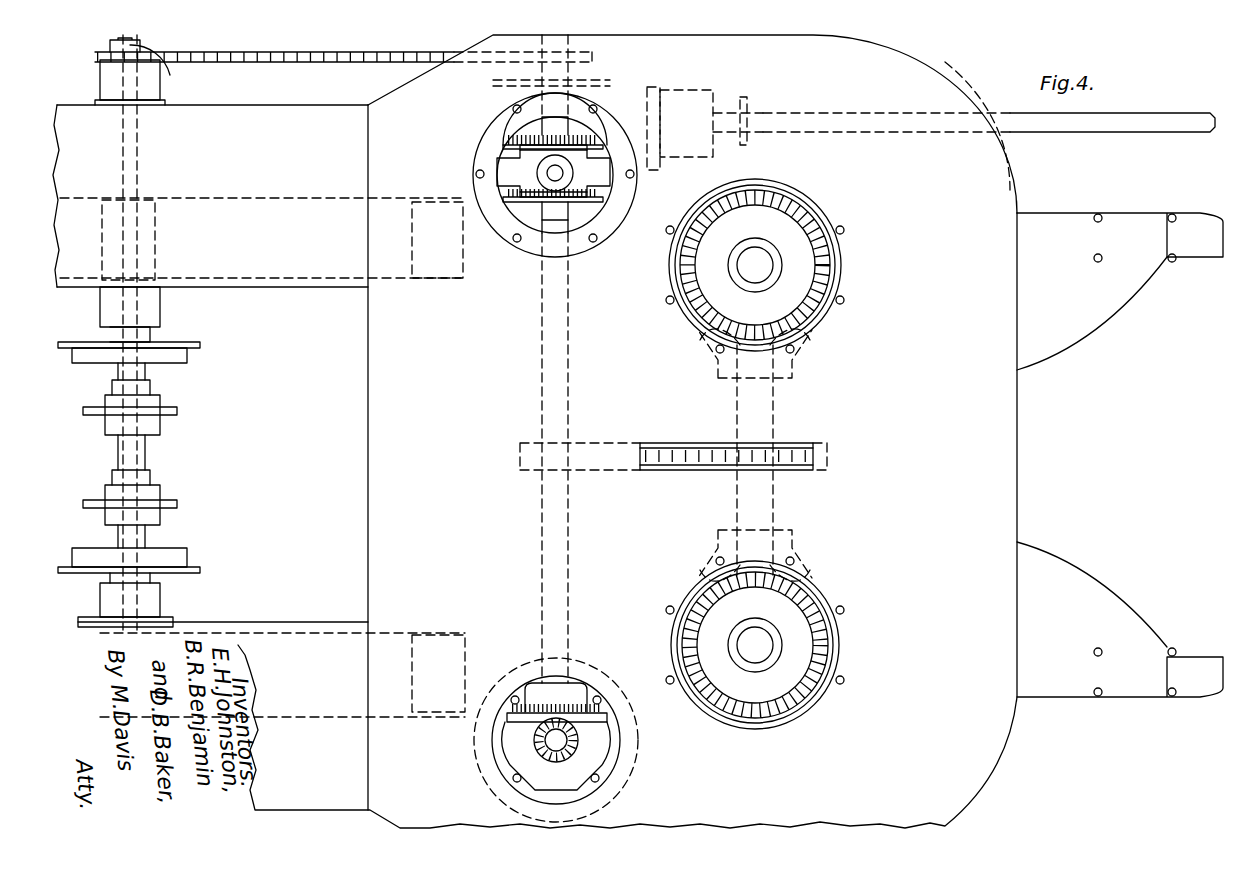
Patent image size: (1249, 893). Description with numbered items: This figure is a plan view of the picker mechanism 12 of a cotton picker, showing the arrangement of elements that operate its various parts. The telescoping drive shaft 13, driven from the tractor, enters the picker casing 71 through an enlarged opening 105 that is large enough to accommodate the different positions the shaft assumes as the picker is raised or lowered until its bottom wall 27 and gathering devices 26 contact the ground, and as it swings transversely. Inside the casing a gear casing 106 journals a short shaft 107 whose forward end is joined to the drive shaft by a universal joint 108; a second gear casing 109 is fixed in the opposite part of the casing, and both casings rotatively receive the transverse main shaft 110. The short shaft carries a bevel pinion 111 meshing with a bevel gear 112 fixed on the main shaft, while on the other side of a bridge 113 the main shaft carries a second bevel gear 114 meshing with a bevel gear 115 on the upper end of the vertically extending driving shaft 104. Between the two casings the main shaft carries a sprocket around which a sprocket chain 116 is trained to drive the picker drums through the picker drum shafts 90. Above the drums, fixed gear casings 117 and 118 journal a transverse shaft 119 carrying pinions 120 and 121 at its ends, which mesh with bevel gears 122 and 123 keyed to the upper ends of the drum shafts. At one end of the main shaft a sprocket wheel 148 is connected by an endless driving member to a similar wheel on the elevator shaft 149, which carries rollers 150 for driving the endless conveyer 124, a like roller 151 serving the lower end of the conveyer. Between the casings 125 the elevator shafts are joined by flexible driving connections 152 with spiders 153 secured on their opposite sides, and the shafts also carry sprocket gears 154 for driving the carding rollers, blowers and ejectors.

The picker mechanism 12 is at (1017, 458).
The telescoping drive shaft 13 is at (1086, 126).
The gathering devices 26 is at (1205, 255).
The bottom wall 27 is at (1085, 355).
The picker casing 71 is at (942, 78).
The picker drum shafts 90 is at (770, 267).
The vertically extending driving shaft 104 is at (535, 197).
The enlarged opening 105 is at (975, 112).
The gear casing 106 is at (640, 93).
The short shaft 107 is at (700, 92).
The universal joint 108 is at (750, 107).
The second gear casing 109 is at (620, 742).
The transverse main shaft 110 is at (555, 232).
The bevel pinion 111 is at (560, 120).
The bevel gear 112 is at (560, 145).
The bridge 113 is at (600, 187).
The second bevel gear 114 is at (560, 197).
The bevel gear 115 is at (500, 165).
The sprocket chain 116 is at (690, 445).
The gear casing 117 is at (820, 690).
The gear casing 118 is at (795, 333).
The transverse shaft 119 is at (775, 402).
The pinion 120 is at (830, 322).
The pinion 121 is at (795, 572).
The bevel gear 122 is at (828, 255).
The bevel gear 123 is at (825, 625).
The endless conveyer 124 is at (264, 198).
The casings 125 is at (290, 288).
The sprocket wheel 148 is at (590, 62).
The elevator shaft 149 is at (170, 70).
The rollers 150 is at (150, 208).
The roller 151 is at (440, 280).
The flexible driving connections 152 is at (160, 498).
The spiders 153 is at (160, 398).
The sprocket gears 154 is at (185, 345).